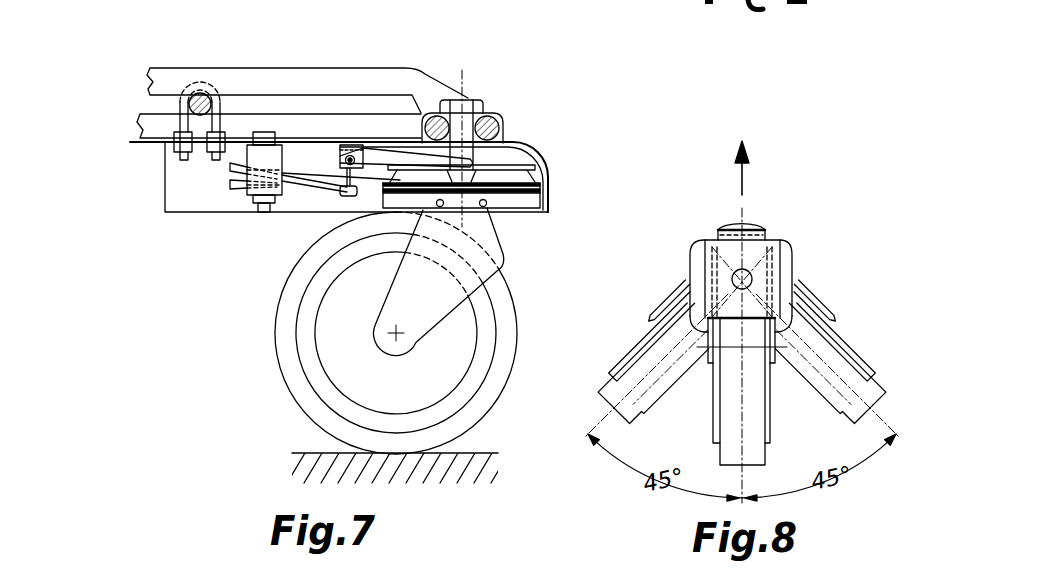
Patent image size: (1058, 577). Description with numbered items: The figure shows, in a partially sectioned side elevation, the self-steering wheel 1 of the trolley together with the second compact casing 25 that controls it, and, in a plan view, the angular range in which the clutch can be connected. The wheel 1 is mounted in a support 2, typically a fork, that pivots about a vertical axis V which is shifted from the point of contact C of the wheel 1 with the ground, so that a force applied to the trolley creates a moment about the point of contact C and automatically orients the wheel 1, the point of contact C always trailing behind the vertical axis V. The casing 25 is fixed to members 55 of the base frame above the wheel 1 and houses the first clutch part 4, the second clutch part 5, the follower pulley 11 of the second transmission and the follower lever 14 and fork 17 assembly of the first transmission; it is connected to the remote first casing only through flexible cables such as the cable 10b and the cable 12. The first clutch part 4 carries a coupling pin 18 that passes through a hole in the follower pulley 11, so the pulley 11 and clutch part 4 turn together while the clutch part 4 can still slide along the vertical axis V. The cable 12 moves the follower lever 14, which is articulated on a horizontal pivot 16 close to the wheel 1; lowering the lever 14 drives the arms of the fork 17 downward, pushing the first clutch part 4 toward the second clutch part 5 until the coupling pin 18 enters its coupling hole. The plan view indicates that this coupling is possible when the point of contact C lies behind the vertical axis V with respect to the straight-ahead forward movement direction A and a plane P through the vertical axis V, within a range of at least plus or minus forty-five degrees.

In FIG. 7, the members of the base frame 55 is at (242, 73).
In FIG. 7, the cable of the second flexible transmission 12 is at (283, 165).
In FIG. 7, the horizontal pivot 16 is at (350, 156).
In FIG. 7, the fork 17 is at (412, 97).
In FIG. 7, the vertical axis V is at (465, 132).
In FIG. 8, the vertical axis V is at (748, 277).
In FIG. 7, the first clutch part 4 is at (508, 158).
In FIG. 7, the second compact casing 25 is at (547, 162).
In FIG. 7, the follower pulley 11 is at (547, 183).
In FIG. 7, the coupling pin 18 is at (487, 206).
In FIG. 7, the second clutch part 5 is at (536, 204).
In FIG. 7, the support 2 is at (433, 320).
In FIG. 7, the self-steering wheel 1 is at (287, 353).
In FIG. 7, the flexible cable 10b is at (283, 180).
In FIG. 7, the follower lever 14 is at (323, 177).
In FIG. 7, the point of contact C is at (397, 453).
In FIG. 8, the point of contact C is at (788, 328).
In FIG. 8, the plane P is at (836, 361).
In FIG. 8, the forward movement direction A is at (742, 177).